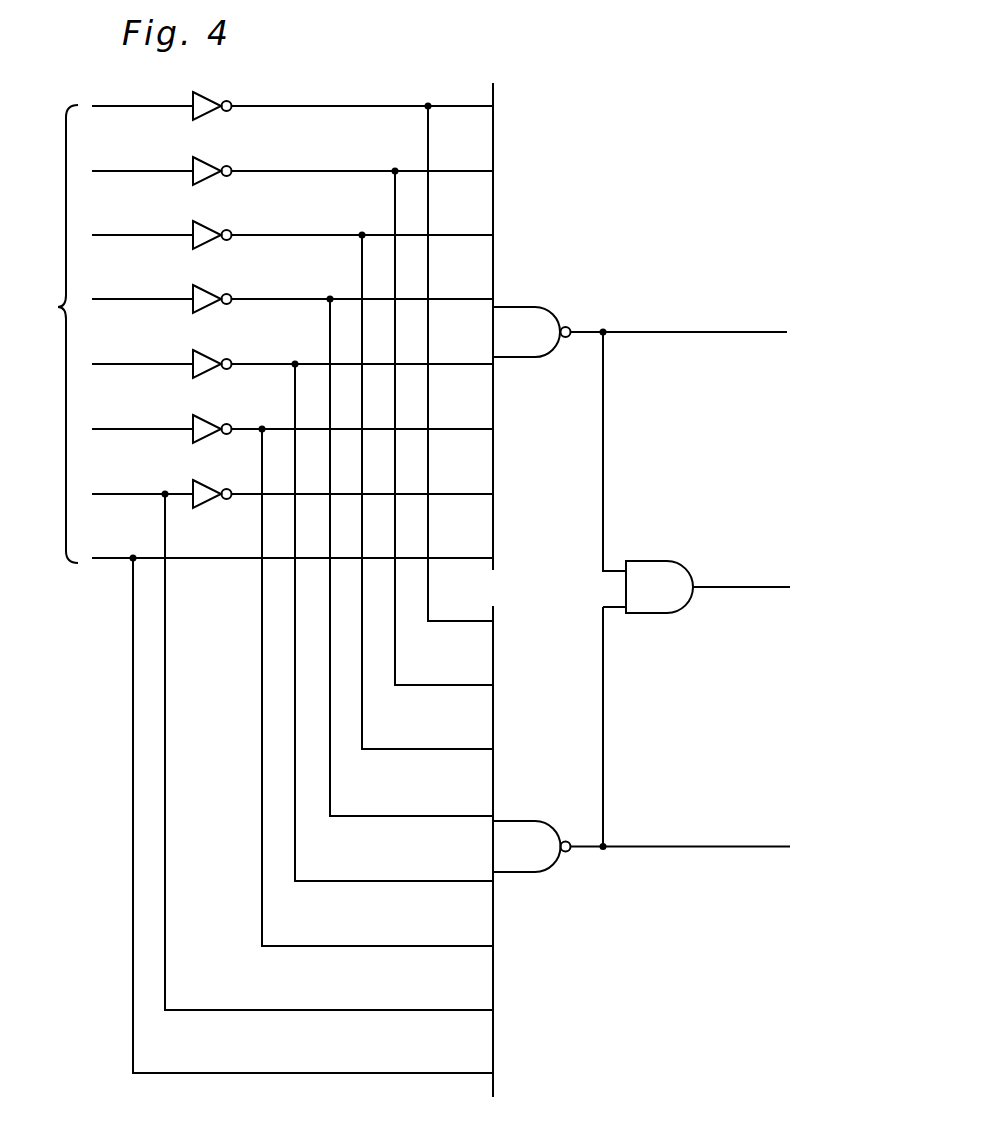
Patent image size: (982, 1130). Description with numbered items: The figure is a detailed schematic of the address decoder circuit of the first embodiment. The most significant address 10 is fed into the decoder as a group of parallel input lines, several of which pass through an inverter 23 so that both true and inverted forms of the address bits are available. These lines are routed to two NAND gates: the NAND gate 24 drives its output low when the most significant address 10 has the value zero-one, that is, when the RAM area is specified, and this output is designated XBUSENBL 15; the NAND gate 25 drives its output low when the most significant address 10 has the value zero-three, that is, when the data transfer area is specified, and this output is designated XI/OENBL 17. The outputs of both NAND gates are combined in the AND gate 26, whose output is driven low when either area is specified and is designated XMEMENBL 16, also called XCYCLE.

The most significant address 10 is at (260, 586).
The inverter 23 is at (193, 226).
The NAND gate 24 is at (515, 315).
The NAND gate 25 is at (525, 828).
The AND gate 26 is at (663, 568).
The XBUSENBL 15 is at (708, 331).
The XMEMENBL 16 is at (792, 587).
The XI/OENBL 17 is at (710, 845).